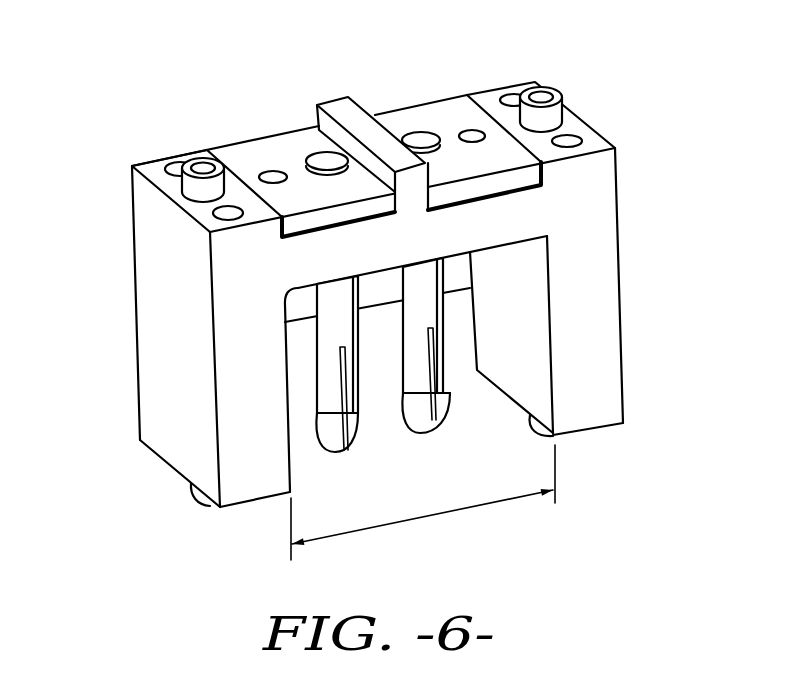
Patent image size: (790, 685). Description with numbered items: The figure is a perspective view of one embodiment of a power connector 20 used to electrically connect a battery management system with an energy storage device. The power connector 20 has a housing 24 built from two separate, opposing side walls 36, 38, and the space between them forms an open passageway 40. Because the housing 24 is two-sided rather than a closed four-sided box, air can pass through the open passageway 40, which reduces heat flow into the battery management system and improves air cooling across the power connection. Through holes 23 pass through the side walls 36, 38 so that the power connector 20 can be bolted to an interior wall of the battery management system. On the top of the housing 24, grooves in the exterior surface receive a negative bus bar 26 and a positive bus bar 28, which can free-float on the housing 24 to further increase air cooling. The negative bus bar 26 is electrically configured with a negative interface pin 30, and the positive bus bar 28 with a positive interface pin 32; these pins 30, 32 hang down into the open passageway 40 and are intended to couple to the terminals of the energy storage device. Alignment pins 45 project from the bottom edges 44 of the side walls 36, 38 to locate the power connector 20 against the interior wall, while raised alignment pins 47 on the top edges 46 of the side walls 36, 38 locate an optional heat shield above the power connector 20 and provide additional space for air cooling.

The power connector 20 is at (118, 75).
The through holes 23 is at (176, 164).
The housing 24 is at (484, 93).
The negative bus bar 26 is at (292, 147).
The positive bus bar 28 is at (427, 123).
The negative interface pin 30 is at (318, 440).
The positive interface pin 32 is at (408, 418).
The side wall 36 is at (245, 482).
The side wall 38 is at (608, 318).
The open passageway 40 is at (460, 512).
The bottom edges 44 is at (162, 460).
The alignment pins 45 is at (203, 500).
The top edges 46 is at (172, 186).
The alignment pins 47 is at (223, 160).